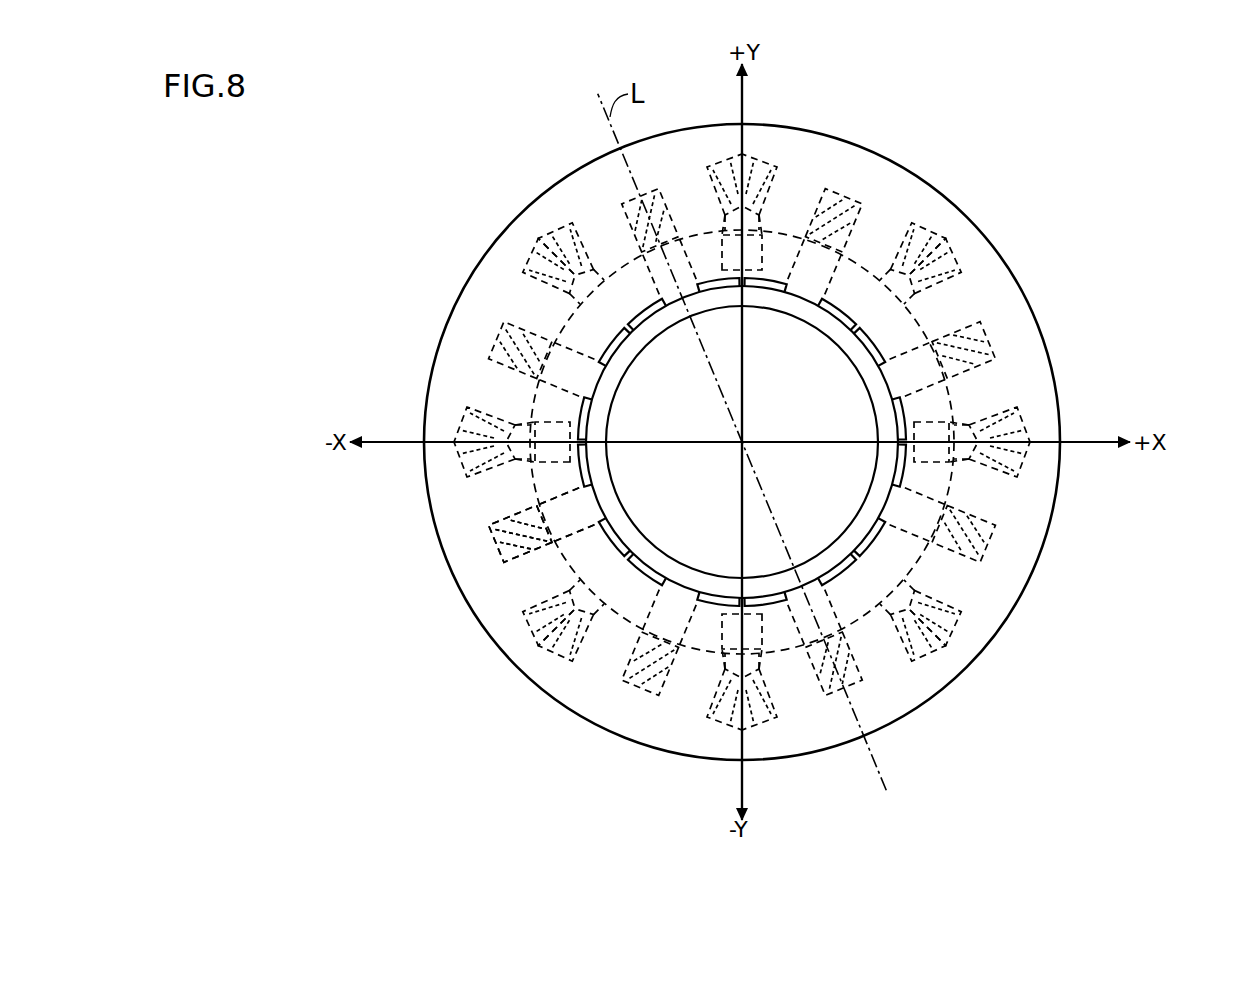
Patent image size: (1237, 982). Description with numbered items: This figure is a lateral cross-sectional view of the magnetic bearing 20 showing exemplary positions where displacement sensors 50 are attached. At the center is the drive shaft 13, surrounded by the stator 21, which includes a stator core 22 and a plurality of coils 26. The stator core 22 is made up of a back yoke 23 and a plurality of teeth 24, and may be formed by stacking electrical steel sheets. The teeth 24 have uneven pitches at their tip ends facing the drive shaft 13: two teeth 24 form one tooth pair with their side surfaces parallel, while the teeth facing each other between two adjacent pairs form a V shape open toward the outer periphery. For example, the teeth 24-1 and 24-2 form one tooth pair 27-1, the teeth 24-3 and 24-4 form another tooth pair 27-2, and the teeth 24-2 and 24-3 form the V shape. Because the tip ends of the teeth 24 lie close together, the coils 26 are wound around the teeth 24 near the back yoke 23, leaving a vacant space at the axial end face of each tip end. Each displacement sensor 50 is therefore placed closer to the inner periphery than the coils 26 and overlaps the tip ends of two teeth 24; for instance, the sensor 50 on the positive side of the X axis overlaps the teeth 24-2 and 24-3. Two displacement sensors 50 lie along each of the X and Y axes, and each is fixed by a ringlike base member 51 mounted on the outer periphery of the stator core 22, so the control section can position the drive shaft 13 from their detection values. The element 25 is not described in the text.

The drive shaft 13 is at (627, 430).
The magnetic bearing 20 is at (989, 121).
The stator 21 is at (360, 210).
The stator core 22 is at (410, 197).
The back yoke 23 is at (513, 253).
The teeth 24 is at (545, 312).
The tooth 24-1 is at (957, 583).
The tooth 24-2 is at (983, 498).
The tooth 24-3 is at (982, 397).
The tooth 24-4 is at (960, 298).
The stator unit 25 is at (372, 606).
The coils 26 is at (510, 335).
The tooth pair 27-1 is at (1150, 508).
The tooth pair 27-2 is at (1150, 260).
The displacement sensor 50 is at (755, 257).
The base member 51 is at (899, 163).